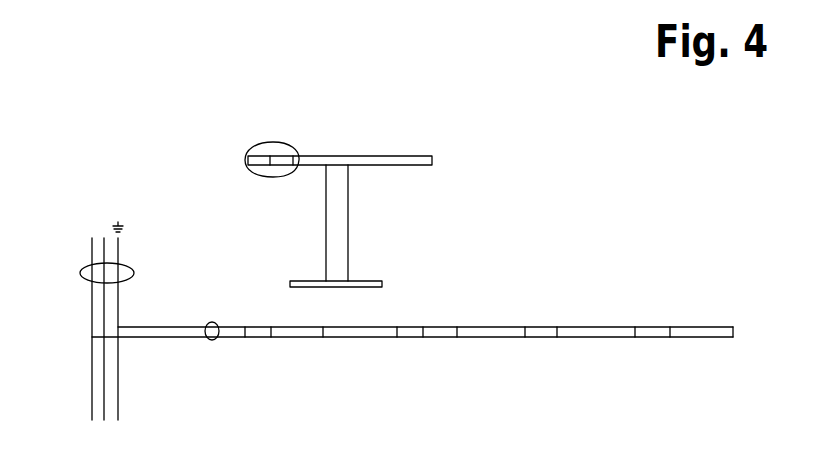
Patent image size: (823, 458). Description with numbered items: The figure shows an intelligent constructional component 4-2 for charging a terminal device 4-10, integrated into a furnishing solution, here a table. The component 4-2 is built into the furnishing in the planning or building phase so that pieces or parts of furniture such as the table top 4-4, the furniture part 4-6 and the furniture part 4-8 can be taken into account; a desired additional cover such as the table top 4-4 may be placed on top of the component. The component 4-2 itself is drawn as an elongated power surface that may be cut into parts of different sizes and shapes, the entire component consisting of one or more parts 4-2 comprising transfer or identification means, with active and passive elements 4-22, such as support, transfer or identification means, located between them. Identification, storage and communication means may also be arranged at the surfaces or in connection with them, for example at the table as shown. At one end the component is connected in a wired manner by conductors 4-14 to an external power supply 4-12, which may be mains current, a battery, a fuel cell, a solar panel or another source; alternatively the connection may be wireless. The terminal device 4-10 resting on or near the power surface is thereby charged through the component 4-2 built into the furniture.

The intelligent constructional component 2 is at (482, 342).
The table top 4 is at (425, 155).
The piece of furniture 6 is at (343, 228).
The piece of furniture 8 is at (372, 280).
The terminal device 10 is at (320, 137).
The external power supply 12 is at (80, 265).
The conductors 14 is at (211, 343).
The end portion 20 is at (247, 146).
The active and passive elements 22 is at (642, 342).